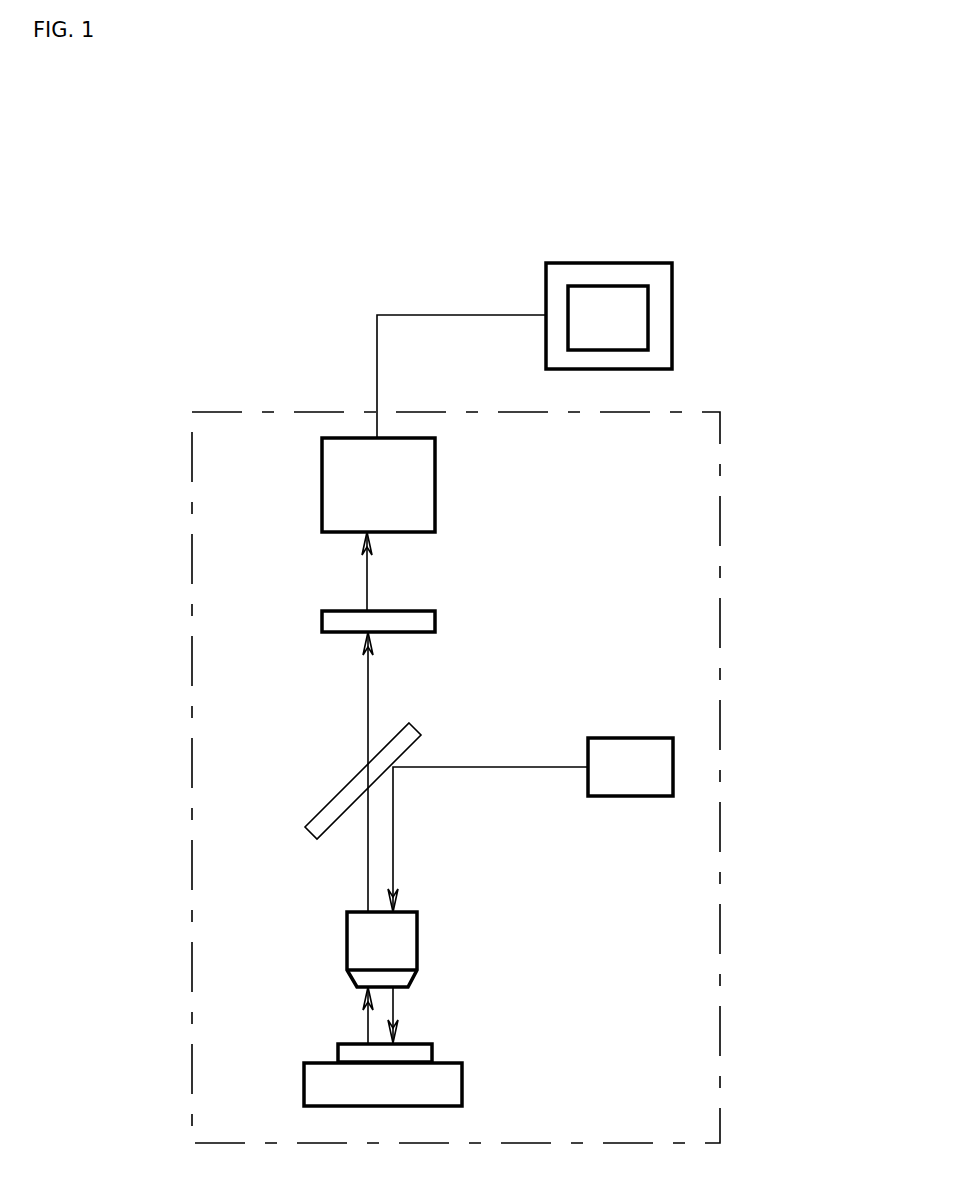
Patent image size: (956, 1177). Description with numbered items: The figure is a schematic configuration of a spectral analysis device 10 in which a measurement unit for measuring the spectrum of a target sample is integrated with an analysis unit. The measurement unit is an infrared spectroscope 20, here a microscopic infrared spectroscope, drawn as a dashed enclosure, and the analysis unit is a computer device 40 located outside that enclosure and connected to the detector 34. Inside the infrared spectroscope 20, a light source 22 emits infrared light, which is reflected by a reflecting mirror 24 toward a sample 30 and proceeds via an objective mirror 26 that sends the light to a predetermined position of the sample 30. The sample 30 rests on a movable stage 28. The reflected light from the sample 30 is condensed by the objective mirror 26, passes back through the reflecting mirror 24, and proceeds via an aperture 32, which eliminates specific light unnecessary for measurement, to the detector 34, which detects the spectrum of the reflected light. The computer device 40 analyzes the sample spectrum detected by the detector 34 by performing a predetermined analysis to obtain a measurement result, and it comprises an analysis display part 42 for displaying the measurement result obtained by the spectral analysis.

The spectral analysis device 10 is at (433, 247).
The infrared spectroscope 20 is at (720, 685).
The light source 22 is at (627, 737).
The reflecting mirror 24 is at (410, 723).
The objective mirror 26 is at (417, 940).
The movable stage 28 is at (463, 1077).
The sample 30 is at (423, 1043).
The aperture 32 is at (435, 617).
The detector 34 is at (435, 473).
The computer device 40 is at (603, 262).
The analysis display part 42 is at (648, 315).